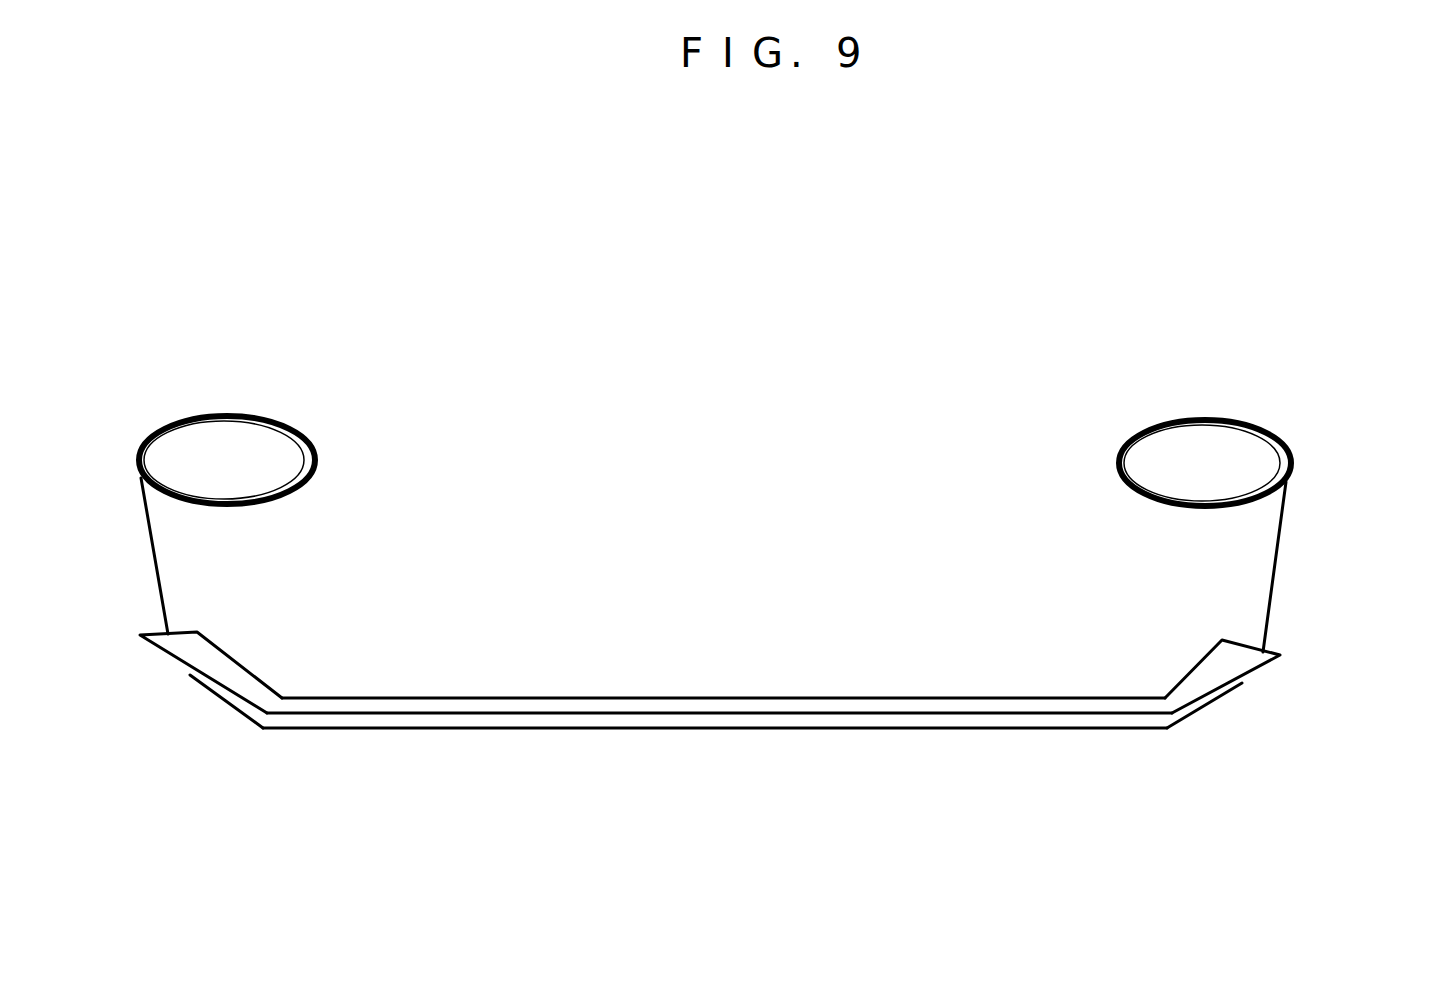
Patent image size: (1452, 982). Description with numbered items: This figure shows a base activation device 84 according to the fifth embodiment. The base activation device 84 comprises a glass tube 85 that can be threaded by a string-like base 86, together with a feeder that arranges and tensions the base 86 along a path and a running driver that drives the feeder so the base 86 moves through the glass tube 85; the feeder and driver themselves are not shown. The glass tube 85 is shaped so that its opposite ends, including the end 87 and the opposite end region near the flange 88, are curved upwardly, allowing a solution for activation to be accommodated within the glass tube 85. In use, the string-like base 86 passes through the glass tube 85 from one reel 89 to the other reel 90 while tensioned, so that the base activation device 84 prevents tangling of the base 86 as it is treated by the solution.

The base activation device 84 is at (748, 317).
The glass tube 85 is at (730, 732).
The string-like base 86 is at (1274, 570).
The end of glass tube 87 is at (1242, 680).
The left flange 88 is at (193, 678).
The reel 89 is at (1212, 422).
The reel 90 is at (218, 415).